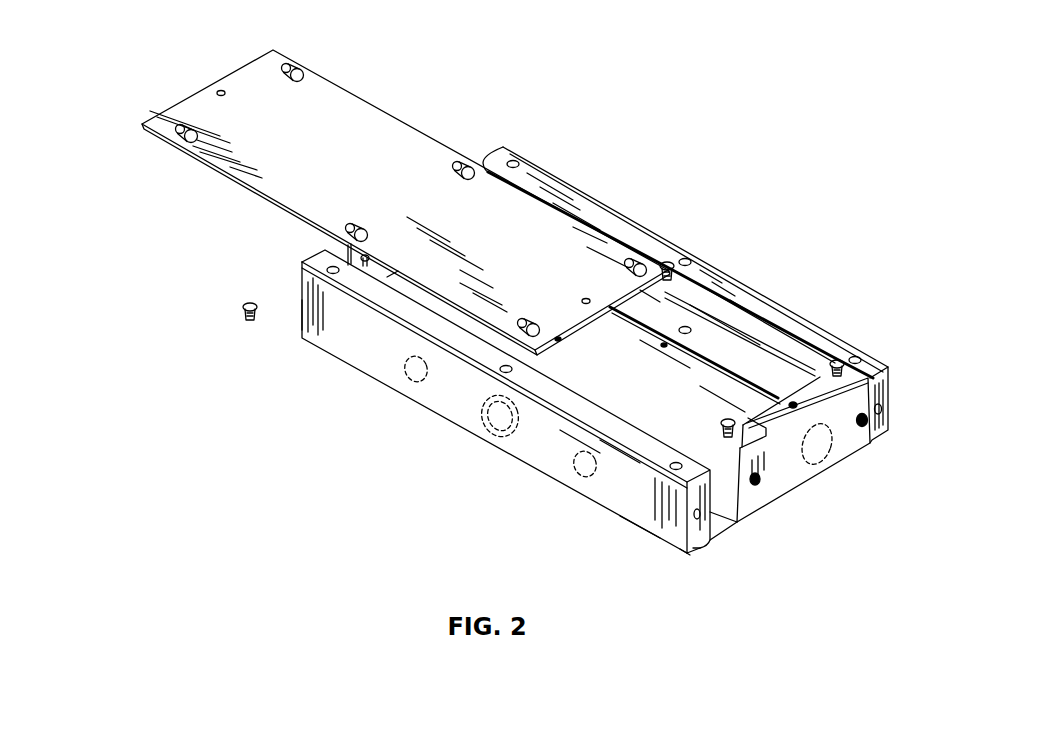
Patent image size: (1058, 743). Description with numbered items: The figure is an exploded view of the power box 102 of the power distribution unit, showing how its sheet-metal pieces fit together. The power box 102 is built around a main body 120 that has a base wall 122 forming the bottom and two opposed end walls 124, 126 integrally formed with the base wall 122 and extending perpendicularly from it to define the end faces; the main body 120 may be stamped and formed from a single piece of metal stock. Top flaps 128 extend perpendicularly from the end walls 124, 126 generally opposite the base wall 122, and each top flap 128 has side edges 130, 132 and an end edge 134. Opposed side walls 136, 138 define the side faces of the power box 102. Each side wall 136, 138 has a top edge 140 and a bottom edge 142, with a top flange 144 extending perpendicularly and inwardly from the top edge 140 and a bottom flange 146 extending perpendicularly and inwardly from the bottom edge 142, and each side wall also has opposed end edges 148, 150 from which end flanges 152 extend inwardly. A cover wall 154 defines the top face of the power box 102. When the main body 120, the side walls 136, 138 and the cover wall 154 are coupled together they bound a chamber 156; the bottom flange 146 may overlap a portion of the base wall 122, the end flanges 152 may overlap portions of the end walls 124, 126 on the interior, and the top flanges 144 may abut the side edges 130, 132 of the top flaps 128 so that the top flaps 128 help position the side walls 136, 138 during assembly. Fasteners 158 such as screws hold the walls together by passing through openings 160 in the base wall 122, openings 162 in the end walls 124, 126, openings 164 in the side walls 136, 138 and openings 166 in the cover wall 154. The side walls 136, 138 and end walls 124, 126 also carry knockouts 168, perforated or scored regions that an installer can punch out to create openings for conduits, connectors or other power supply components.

The power box 102 is at (782, 220).
The main body 120 is at (713, 393).
The base wall 122 is at (750, 403).
The end wall 124 is at (840, 450).
The end wall 126 is at (380, 273).
The top flap 128 is at (813, 393).
The side edge 130 is at (873, 377).
The side edge 132 is at (746, 440).
The end edge 134 is at (763, 407).
The side wall 136 is at (717, 327).
The side wall 138 is at (603, 493).
The top edge 140 is at (648, 467).
The bottom edge 142 is at (653, 537).
The top flange 144 is at (715, 273).
The bottom flange 146 is at (653, 317).
The end edge 148 is at (685, 553).
The end edge 150 is at (300, 313).
The end flange 152 is at (697, 543).
The cover wall 154 is at (402, 135).
The chamber 156 is at (621, 391).
The fastener 158 is at (240, 308).
The opening 160 is at (668, 300).
The opening 162 is at (863, 425).
The opening 164 is at (512, 163).
The opening 166 is at (293, 70).
The knockout 168 is at (405, 378).